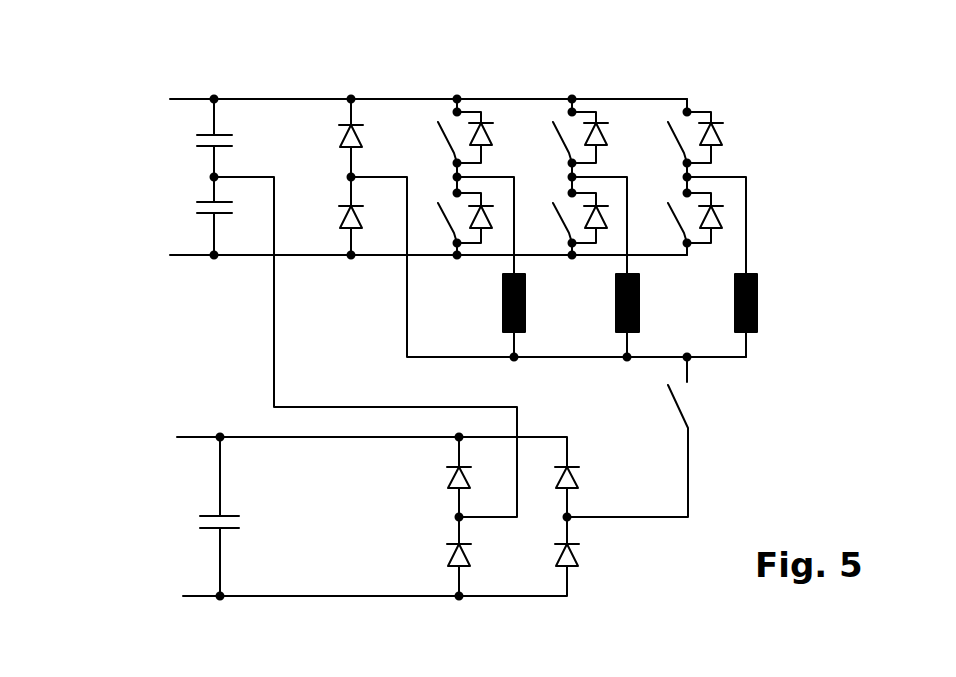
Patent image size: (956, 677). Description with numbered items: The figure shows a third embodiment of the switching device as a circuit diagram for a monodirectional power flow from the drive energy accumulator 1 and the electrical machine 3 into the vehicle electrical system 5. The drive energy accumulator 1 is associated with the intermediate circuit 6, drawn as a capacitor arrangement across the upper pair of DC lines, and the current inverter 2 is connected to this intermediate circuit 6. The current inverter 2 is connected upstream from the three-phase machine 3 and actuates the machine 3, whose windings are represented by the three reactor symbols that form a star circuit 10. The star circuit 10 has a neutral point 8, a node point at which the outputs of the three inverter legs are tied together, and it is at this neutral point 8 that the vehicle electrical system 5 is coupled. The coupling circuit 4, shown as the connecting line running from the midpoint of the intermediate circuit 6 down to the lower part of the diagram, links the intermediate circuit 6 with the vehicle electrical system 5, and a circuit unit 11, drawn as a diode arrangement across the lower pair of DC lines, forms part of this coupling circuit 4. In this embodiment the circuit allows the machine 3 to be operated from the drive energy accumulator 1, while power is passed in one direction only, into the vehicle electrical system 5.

The drive energy accumulator 1 is at (128, 205).
The current inverter 2 is at (632, 71).
The three-phase electrical machine 3 is at (792, 330).
The coupling circuit 4 is at (242, 379).
The vehicle electrical system 5 is at (137, 513).
The intermediate circuit 6 is at (175, 125).
The neutral point 8 is at (710, 374).
The star circuit 10 is at (748, 358).
The circuit unit 11 is at (538, 622).